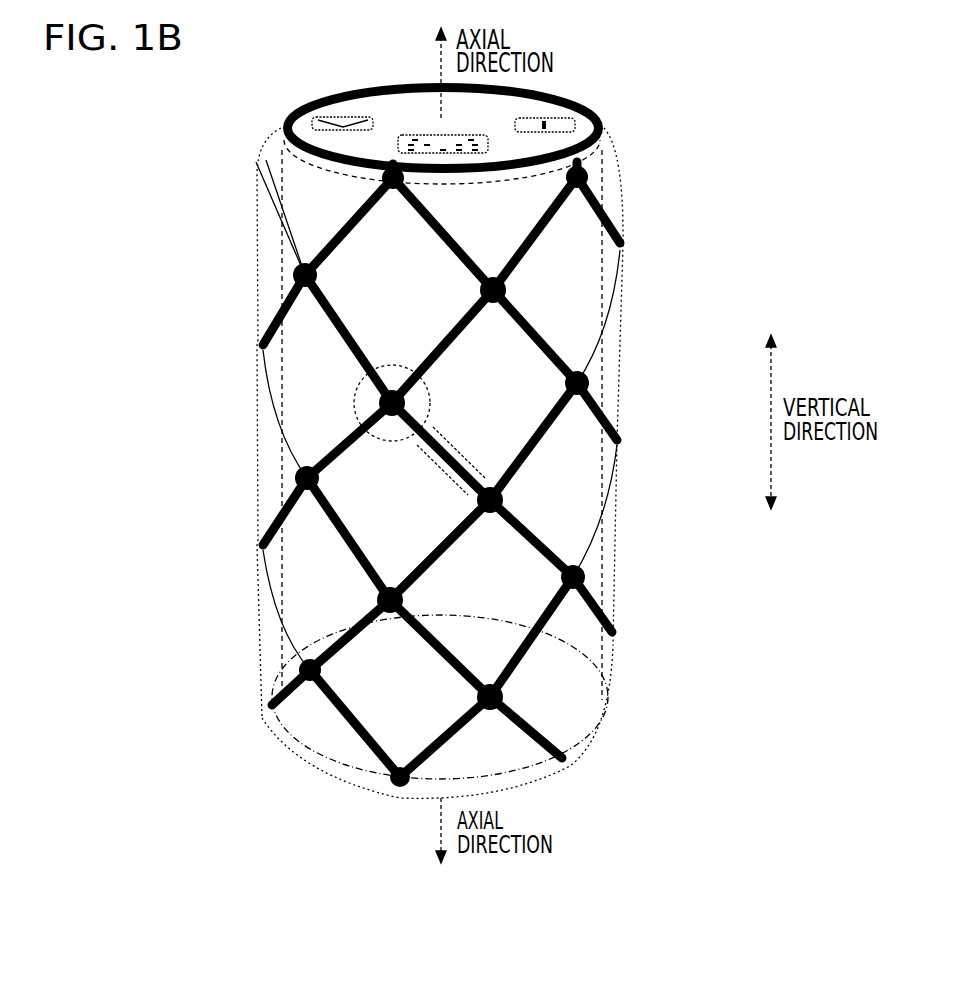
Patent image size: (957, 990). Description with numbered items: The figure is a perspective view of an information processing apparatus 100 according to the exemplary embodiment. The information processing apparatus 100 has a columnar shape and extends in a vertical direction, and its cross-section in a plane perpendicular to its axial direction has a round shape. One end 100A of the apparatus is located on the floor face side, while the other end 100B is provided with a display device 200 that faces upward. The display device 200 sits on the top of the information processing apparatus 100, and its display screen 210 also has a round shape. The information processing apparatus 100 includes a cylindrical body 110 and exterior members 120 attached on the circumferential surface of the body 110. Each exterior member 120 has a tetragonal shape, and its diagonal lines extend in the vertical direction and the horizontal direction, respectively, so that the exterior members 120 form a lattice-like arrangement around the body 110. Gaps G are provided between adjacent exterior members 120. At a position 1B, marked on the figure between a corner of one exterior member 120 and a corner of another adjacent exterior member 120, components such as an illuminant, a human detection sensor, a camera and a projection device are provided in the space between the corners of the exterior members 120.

The information processing apparatus 100 is at (575, 80).
The end 100A is at (628, 703).
The other end 100B is at (642, 145).
The cylindrical body 110 is at (612, 248).
The exterior member 120 is at (513, 403).
The display device 200 is at (379, 105).
The display screen 210 is at (321, 112).
The gap G is at (478, 468).
The position 1B is at (355, 383).